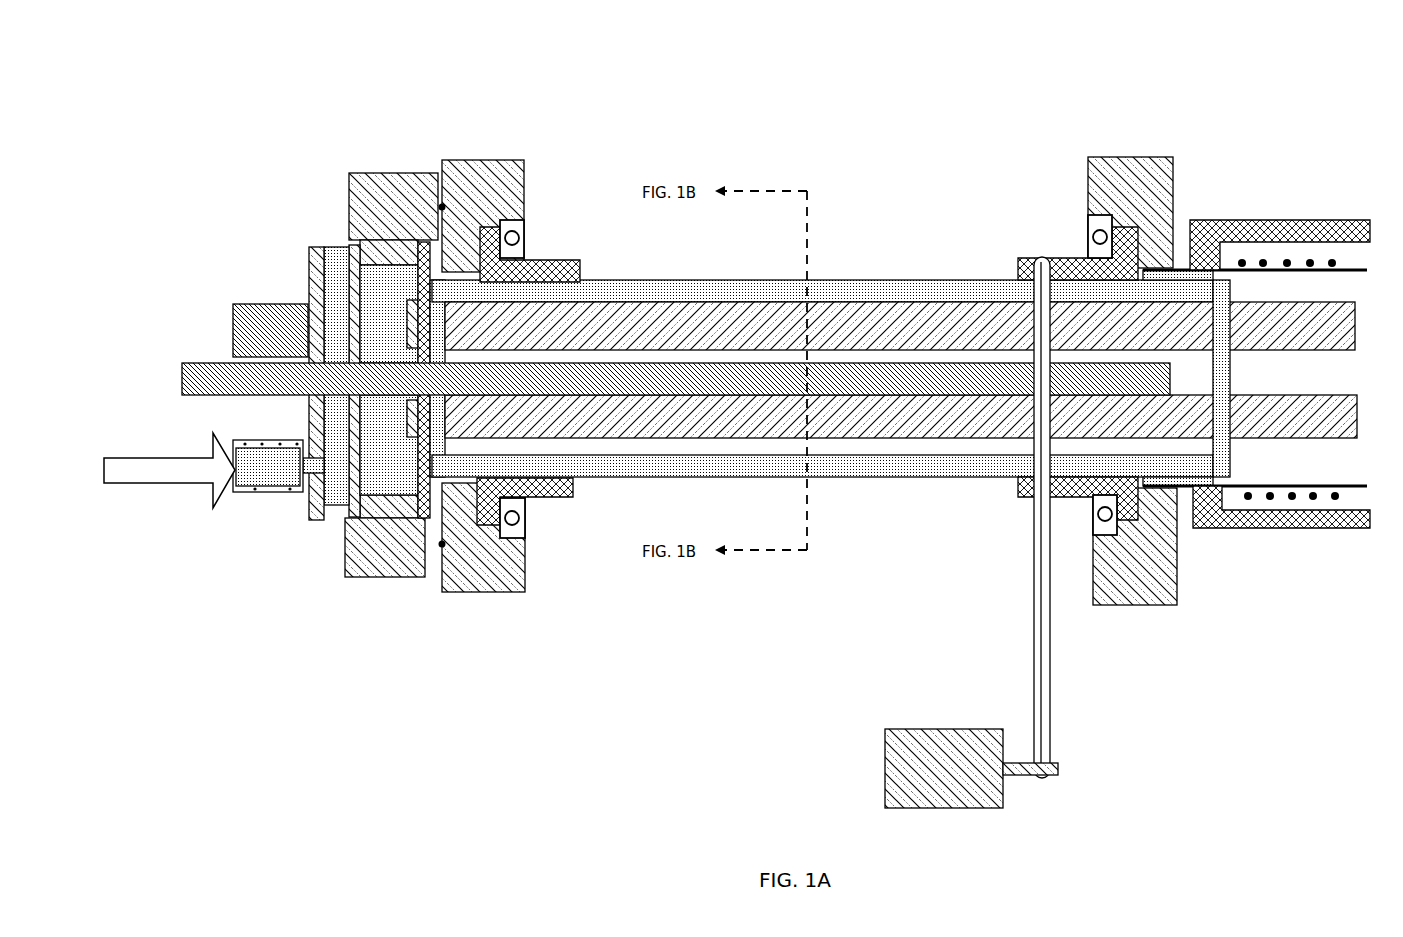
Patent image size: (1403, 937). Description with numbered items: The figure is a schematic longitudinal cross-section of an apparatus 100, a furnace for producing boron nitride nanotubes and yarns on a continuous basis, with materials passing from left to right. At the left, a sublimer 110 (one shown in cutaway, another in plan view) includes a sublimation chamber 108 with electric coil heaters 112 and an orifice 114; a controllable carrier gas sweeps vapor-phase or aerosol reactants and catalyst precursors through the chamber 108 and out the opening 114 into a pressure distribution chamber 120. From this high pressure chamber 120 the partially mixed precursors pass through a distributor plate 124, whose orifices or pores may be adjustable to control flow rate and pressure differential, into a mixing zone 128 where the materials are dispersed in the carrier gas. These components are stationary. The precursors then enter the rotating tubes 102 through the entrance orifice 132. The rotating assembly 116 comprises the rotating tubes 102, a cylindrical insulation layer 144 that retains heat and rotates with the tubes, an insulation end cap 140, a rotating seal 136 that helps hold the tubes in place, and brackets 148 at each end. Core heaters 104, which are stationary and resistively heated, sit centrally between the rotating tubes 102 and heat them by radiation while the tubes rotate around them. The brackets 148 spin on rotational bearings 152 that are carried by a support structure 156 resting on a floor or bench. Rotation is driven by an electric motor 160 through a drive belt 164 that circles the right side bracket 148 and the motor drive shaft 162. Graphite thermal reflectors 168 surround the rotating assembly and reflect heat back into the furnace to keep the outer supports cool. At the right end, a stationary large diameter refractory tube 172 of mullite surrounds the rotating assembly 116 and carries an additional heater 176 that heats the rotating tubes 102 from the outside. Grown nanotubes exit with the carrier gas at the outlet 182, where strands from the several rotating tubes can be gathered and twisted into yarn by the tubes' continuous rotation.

The apparatus 100 is at (312, 168).
The rotating tubes 102 is at (887, 338).
The core heaters 104 is at (240, 377).
The sublimation chamber 108 is at (267, 472).
The sublimer 110 is at (287, 330).
The electric coil heaters 112 is at (313, 467).
The orifice 114 is at (318, 476).
The rotating assembly 116 is at (866, 233).
The pressure distribution chamber 120 is at (343, 292).
The distributor plate 124 is at (354, 267).
The mixing zone 128 is at (397, 281).
The orifice 132 is at (402, 420).
The rotating seal 136 is at (425, 440).
The insulation cap 140 is at (1222, 417).
The insulation 144 is at (612, 290).
The brackets 148 is at (557, 268).
The rotational bearings 152 is at (525, 237).
The support structure 156 is at (478, 570).
The motor 160 is at (958, 783).
The motor drive shaft 162 is at (1020, 773).
The drive belt 164 is at (1045, 567).
The graphite thermal reflectors 168 is at (1183, 278).
The large diameter refractory tube 172 is at (1353, 267).
The heater 176 is at (1270, 497).
The outlet 182 is at (1357, 410).